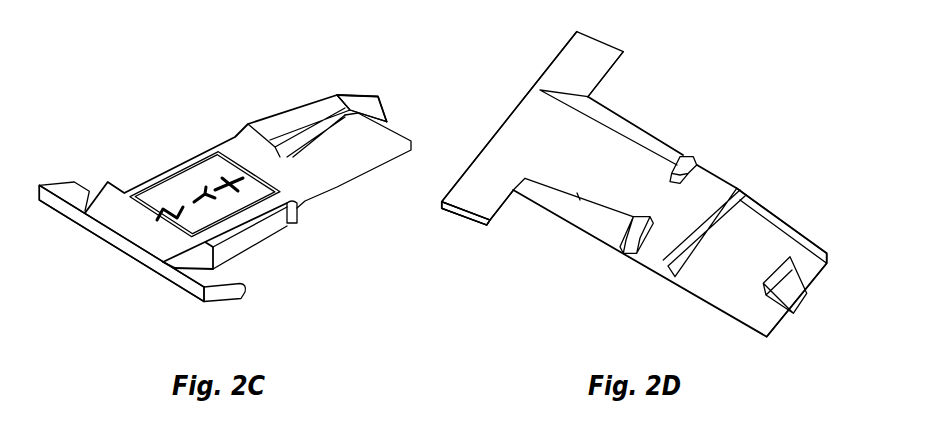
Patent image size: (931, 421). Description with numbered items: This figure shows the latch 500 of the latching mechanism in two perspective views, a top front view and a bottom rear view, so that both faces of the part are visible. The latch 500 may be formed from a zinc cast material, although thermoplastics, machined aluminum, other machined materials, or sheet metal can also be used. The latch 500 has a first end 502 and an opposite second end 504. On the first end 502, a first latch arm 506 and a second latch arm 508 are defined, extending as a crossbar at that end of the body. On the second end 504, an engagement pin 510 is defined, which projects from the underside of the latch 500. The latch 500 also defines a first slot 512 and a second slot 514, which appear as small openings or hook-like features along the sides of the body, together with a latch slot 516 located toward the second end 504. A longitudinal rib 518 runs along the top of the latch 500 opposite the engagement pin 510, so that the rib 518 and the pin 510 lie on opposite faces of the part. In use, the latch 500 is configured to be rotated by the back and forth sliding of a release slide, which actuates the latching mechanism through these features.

In FIG. 2C, the latch 500 is at (150, 86).
In FIG. 2D, the latch 500 is at (699, 93).
In FIG. 2C, the first end 502 is at (136, 228).
In FIG. 2D, the first end 502 is at (530, 107).
In FIG. 2C, the second end 504 is at (390, 127).
In FIG. 2D, the second end 504 is at (809, 258).
In FIG. 2C, the first latch arm 506 is at (65, 183).
In FIG. 2D, the first latch arm 506 is at (461, 196).
In FIG. 2C, the second latch arm 508 is at (232, 268).
In FIG. 2D, the second latch arm 508 is at (611, 51).
In FIG. 2D, the engagement pin 510 is at (773, 262).
In FIG. 2D, the first slot 512 is at (623, 256).
In FIG. 2C, the second slot 514 is at (292, 219).
In FIG. 2D, the second slot 514 is at (691, 159).
In FIG. 2D, the latch slot 516 is at (690, 220).
In FIG. 2C, the longitudinal rib 518 is at (393, 93).